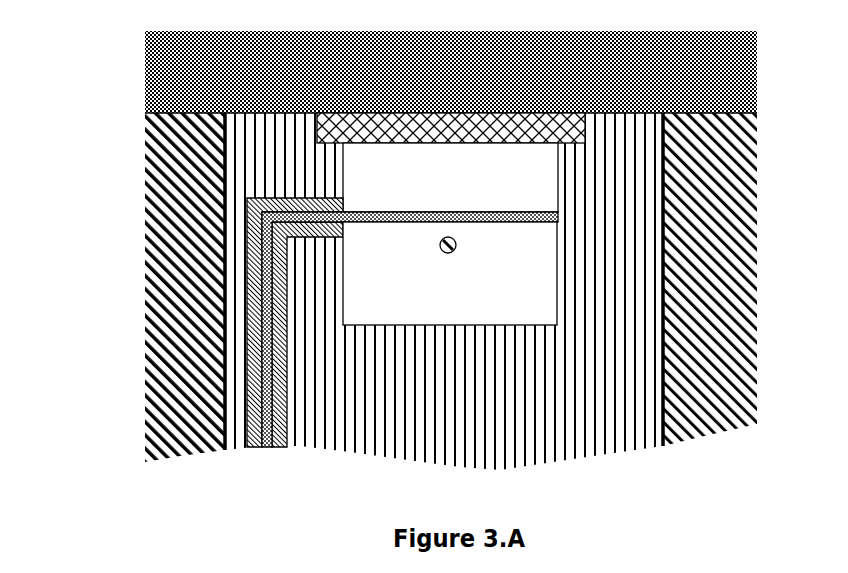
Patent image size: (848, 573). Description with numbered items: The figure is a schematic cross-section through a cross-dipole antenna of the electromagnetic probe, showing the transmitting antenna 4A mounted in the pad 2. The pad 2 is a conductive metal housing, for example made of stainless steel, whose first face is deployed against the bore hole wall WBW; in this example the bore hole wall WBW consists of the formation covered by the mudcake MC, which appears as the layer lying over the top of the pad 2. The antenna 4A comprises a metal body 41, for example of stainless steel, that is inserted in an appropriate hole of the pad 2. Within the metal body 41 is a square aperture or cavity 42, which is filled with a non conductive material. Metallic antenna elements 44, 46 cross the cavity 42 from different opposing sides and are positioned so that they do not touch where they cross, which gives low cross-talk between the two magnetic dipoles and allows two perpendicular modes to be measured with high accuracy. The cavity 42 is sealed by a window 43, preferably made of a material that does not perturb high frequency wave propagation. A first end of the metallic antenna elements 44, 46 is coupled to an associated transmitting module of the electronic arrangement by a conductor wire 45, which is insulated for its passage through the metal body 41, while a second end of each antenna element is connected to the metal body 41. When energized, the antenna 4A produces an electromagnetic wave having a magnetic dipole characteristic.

The mudcake MC is at (152, 55).
The bore hole wall WBW is at (158, 98).
The pad 2 is at (157, 175).
The transmitting antenna 4A is at (295, 461).
The metal body 41 is at (575, 447).
The cavity 42 is at (556, 171).
The window 43 is at (590, 123).
The metallic antenna element 44 is at (537, 242).
The conductor wire 45 is at (647, 304).
The metallic antenna element 46 is at (466, 290).